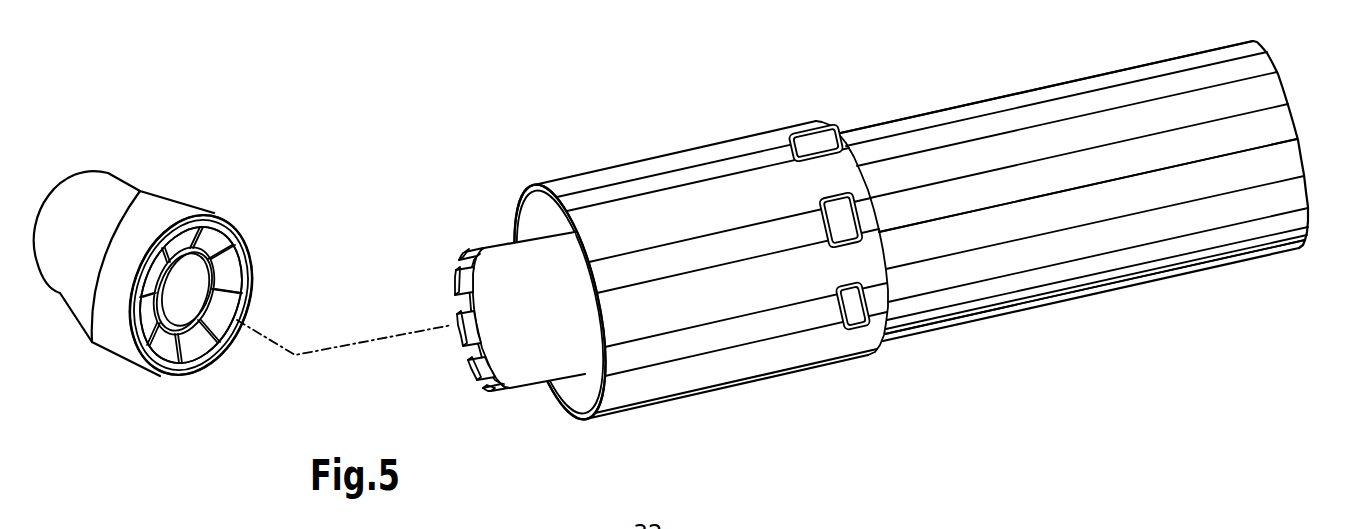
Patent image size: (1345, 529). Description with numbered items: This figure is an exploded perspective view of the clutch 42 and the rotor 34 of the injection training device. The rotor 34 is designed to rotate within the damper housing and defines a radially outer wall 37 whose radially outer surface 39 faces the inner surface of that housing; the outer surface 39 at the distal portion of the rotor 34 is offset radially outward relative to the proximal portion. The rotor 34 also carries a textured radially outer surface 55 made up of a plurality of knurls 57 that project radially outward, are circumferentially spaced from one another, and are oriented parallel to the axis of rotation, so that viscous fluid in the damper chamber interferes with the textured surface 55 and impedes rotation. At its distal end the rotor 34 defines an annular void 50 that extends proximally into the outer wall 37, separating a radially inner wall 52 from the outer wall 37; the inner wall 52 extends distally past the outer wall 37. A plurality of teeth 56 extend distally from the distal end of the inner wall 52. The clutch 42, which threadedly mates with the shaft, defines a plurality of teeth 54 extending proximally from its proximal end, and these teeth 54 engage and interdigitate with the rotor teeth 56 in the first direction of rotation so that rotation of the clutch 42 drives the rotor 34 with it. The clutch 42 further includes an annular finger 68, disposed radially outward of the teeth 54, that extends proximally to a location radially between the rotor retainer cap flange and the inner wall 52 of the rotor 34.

The rotor 34 is at (923, 108).
The radially outer wall 37 is at (663, 152).
The radially outer surface 39 is at (1100, 293).
The clutch 42 is at (161, 184).
The annular void 50 is at (562, 392).
The radially inner wall 52 is at (500, 243).
The teeth 54 is at (243, 268).
The textured radially outer surface 55 is at (1055, 85).
The teeth 56 is at (462, 352).
The knurls 57 is at (1202, 160).
The finger 68 is at (172, 384).